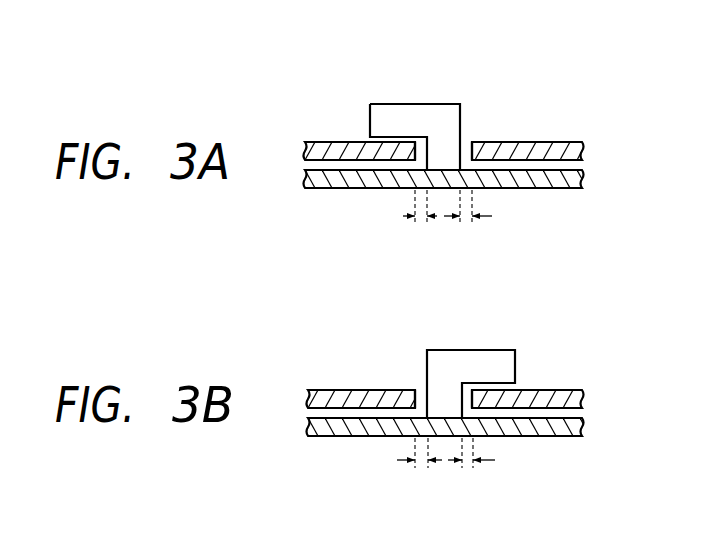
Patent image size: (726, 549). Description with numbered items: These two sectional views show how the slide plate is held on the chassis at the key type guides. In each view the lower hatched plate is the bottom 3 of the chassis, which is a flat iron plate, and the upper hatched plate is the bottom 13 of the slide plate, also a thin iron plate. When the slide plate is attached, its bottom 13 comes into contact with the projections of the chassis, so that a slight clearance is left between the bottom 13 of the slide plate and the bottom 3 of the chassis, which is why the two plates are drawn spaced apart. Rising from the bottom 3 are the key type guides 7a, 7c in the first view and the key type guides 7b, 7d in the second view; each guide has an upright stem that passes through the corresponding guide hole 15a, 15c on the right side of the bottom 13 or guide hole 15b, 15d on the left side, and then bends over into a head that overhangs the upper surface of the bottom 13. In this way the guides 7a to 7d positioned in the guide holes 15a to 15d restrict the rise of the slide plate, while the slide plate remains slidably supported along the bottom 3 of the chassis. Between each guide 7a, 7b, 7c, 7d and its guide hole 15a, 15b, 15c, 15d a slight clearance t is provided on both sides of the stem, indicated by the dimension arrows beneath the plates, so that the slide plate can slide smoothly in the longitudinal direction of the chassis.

In FIG. 3A, the bottom of the chassis 3 is at (555, 188).
In FIG. 3B, the bottom of the chassis 3 is at (552, 436).
In FIG. 3A, the bottom of the slide plate 13 is at (565, 142).
In FIG. 3B, the bottom of the slide plate 13 is at (542, 390).
In FIG. 3A, the key type guide 7a is at (415, 111).
In FIG. 3A, the key type guide 7c is at (409, 103).
In FIG. 3B, the key type guide 7b is at (485, 358).
In FIG. 3B, the key type guide 7d is at (463, 350).
In FIG. 3A, the guide hole 15a is at (501, 122).
In FIG. 3A, the guide hole 15c is at (468, 146).
In FIG. 3B, the guide hole 15b is at (392, 364).
In FIG. 3B, the guide hole 15d is at (418, 390).
In FIG. 3A, the clearance t is at (447, 221).
In FIG. 3B, the clearance t is at (446, 469).